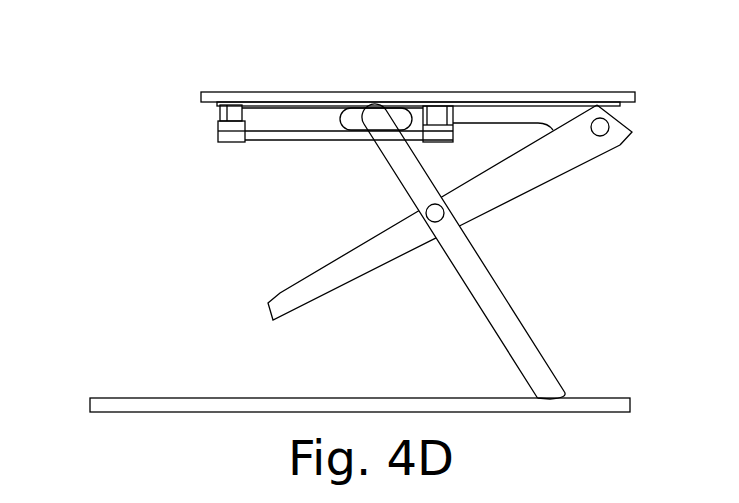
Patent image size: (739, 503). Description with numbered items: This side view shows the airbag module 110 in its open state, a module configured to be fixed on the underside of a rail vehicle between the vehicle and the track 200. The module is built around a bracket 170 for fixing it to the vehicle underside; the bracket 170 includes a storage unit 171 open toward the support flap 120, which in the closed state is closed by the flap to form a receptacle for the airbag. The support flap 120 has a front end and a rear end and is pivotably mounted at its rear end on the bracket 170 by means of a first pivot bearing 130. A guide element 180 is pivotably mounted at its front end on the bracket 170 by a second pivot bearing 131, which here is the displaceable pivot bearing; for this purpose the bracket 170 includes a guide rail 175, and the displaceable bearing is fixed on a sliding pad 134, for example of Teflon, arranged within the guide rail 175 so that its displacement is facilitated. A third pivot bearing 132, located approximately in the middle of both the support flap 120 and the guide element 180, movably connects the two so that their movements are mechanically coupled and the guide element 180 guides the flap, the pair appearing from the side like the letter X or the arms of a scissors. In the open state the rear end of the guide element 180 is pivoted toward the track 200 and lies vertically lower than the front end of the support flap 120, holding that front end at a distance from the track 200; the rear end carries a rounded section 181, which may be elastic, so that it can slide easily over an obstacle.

The airbag module 110 is at (232, 92).
The bracket 170 is at (488, 92).
The second pivot bearing 131 is at (373, 134).
The sliding pad 134 is at (338, 116).
The guide rail 175 is at (237, 120).
The storage unit 171 is at (232, 144).
The support flap 120 is at (363, 284).
The first pivot bearing 130 is at (610, 133).
The third pivot bearing 132 is at (447, 214).
The guide element 180 is at (522, 318).
The rounded section 181 is at (498, 338).
The track 200 is at (150, 398).